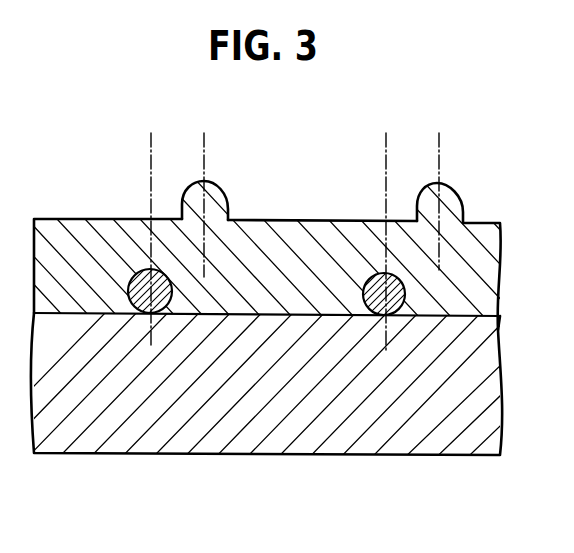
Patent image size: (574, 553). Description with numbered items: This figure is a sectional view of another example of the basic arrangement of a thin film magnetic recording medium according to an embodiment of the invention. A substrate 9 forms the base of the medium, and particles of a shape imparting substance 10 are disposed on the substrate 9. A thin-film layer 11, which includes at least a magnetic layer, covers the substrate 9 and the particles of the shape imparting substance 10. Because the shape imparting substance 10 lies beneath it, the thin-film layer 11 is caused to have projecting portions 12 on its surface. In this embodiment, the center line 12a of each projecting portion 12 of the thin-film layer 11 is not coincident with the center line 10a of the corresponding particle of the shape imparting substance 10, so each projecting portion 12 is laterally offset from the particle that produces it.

The substrate 9 is at (305, 440).
The particle of shape imparting substance 10 is at (372, 273).
The center line of particle 10a is at (150, 143).
The thin-film layer 11 is at (230, 244).
The projecting portion 12 is at (448, 203).
The center line of projecting portion 12a is at (205, 160).